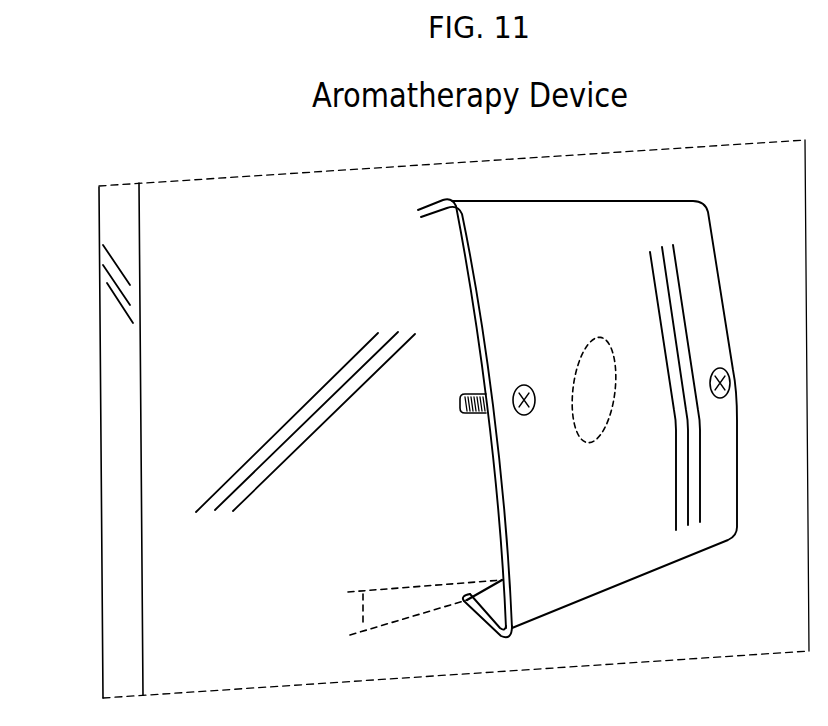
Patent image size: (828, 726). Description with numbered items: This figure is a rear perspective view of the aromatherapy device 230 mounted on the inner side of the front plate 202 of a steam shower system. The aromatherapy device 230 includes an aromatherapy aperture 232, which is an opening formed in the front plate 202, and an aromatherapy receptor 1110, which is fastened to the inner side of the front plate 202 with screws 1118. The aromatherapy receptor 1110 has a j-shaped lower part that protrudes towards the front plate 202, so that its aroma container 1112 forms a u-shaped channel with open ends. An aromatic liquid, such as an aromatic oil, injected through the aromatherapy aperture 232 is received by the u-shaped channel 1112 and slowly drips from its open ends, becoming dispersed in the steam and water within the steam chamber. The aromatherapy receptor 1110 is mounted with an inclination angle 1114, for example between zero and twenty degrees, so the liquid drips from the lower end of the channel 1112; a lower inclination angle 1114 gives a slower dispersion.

The front plate 202 is at (125, 579).
The aromatherapy device 230 is at (323, 283).
The aromatherapy aperture 232 is at (588, 330).
The aromatherapy receptor 1110 is at (698, 567).
The aroma container 1112 is at (487, 597).
The inclination angle 1114 is at (352, 612).
The screws 1118 is at (525, 418).